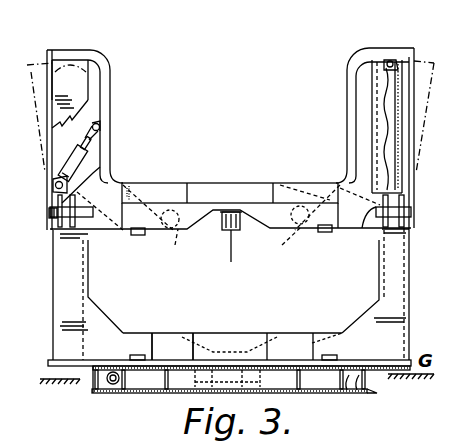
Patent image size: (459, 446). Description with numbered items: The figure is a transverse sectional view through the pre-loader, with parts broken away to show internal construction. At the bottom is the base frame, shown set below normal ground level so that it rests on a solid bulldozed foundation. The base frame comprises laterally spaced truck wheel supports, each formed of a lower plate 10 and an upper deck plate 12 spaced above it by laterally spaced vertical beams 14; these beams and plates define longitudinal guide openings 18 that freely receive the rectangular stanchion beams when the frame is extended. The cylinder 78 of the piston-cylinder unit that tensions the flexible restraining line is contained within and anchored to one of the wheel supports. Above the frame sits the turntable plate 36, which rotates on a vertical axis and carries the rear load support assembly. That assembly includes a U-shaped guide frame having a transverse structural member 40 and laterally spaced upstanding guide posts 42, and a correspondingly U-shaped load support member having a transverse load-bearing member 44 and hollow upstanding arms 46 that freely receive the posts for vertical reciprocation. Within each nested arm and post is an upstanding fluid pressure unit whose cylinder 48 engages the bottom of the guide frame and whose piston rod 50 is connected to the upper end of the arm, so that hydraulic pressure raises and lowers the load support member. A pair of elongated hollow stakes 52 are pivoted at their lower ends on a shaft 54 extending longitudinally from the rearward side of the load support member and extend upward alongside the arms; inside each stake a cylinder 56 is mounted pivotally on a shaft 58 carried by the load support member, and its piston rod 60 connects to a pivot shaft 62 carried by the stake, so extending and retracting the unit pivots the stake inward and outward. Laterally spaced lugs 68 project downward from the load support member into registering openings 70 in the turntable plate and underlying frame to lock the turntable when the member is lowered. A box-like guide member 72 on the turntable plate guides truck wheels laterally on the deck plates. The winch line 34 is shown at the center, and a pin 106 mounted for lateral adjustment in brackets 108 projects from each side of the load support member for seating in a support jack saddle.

The lower plate 10 is at (96, 390).
The upper deck plate 12 is at (350, 358).
The vertical beams 14 is at (357, 392).
The longitudinal guide openings 18 is at (150, 382).
The line 34 is at (231, 262).
The turntable plate 36 is at (411, 358).
The transverse structural member 40 is at (330, 333).
The guide posts 42 is at (89, 281).
The transverse load-bearing member 44 is at (225, 183).
The upstanding arms 46 is at (376, 104).
The cylinder 48 is at (54, 297).
The piston rod 50 is at (393, 87).
The stakes 52 is at (105, 100).
The shaft 54 is at (231, 225).
The cylinder 56 is at (95, 158).
The shaft 58 is at (54, 188).
The piston rod 60 is at (100, 142).
The pivot shaft 62 is at (100, 128).
The lugs 68 is at (137, 236).
The registering openings 70 is at (137, 356).
The guide member 72 is at (170, 335).
The cylinder 78 is at (115, 385).
The pin 106 is at (54, 218).
The brackets 108 is at (55, 222).